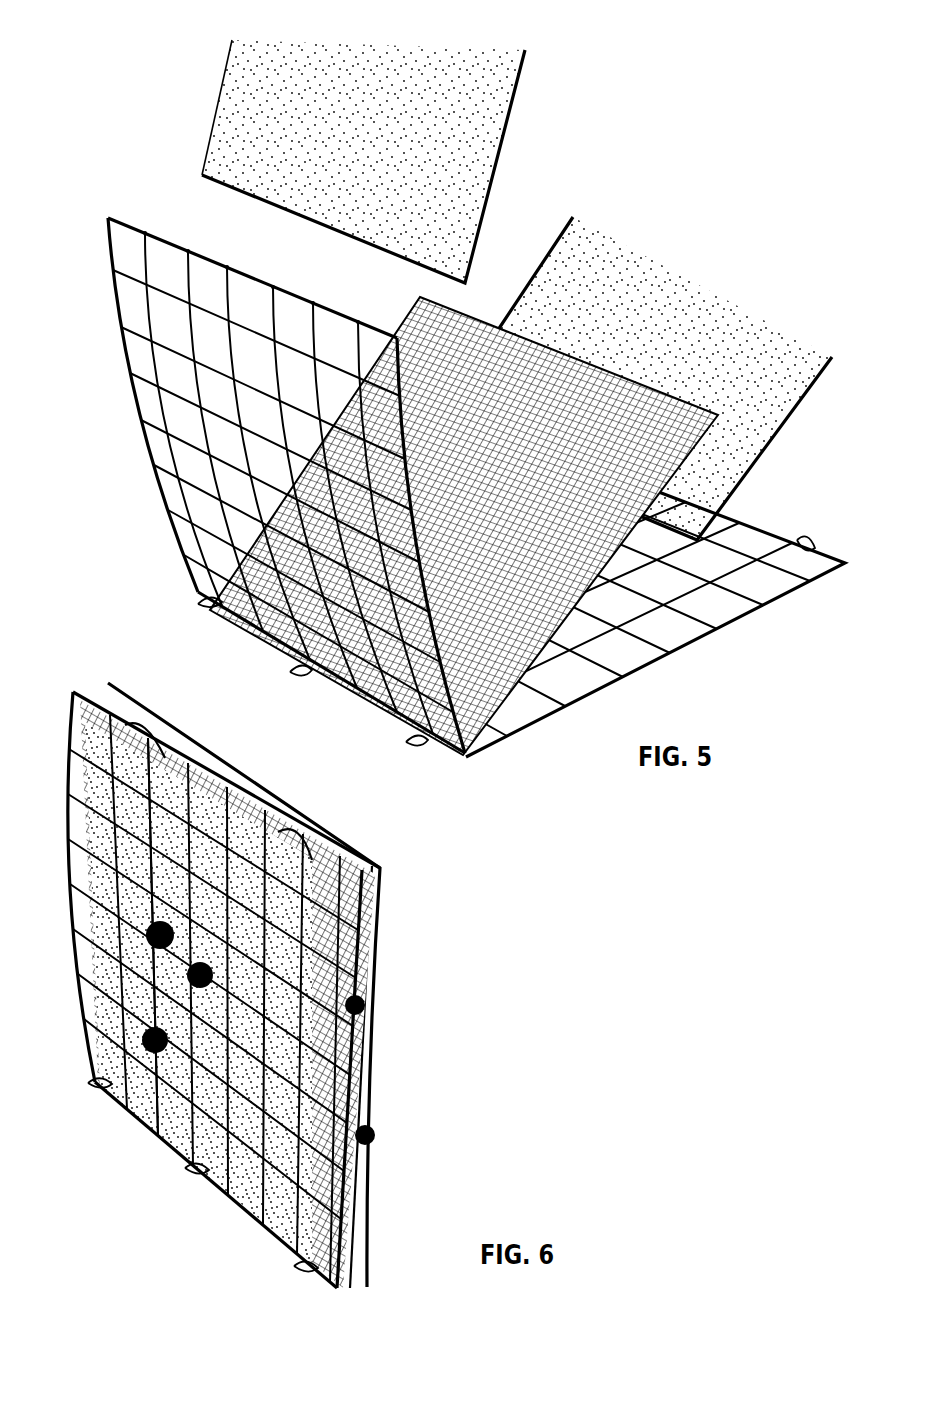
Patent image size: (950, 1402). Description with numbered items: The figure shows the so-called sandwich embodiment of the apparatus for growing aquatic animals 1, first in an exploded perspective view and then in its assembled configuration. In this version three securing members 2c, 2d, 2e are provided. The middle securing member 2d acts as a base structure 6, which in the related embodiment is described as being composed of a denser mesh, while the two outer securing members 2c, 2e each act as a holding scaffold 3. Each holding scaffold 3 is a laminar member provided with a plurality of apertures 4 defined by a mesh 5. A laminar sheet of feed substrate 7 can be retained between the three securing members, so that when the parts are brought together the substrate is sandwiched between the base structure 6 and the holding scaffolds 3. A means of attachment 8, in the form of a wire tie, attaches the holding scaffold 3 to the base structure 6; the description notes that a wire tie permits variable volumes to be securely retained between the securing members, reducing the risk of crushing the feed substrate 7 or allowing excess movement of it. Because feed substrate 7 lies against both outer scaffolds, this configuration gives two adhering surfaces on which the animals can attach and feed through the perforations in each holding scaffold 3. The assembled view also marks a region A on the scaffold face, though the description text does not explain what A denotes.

In FIG. 5, the apparatus for growing aquatic animals 1 is at (467, 416).
In FIG. 6, the apparatus for growing aquatic animals 1 is at (240, 969).
In FIG. 5, the securing member 2c is at (166, 490).
In FIG. 6, the securing member 2c is at (70, 890).
In FIG. 5, the securing member 2d is at (578, 655).
In FIG. 6, the securing member 2d is at (224, 782).
In FIG. 5, the securing member 2e is at (504, 746).
In FIG. 6, the securing member 2e is at (380, 887).
In FIG. 5, the holding scaffold 3 is at (334, 505).
In FIG. 6, the holding scaffold 3 is at (231, 990).
In FIG. 5, the apertures 4 is at (523, 605).
In FIG. 6, the apertures 4 is at (370, 968).
In FIG. 5, the mesh 5 is at (541, 609).
In FIG. 6, the mesh 5 is at (380, 933).
In FIG. 5, the base structure 6 is at (410, 323).
In FIG. 6, the base structure 6 is at (100, 690).
In FIG. 5, the feed substrate 7 is at (568, 263).
In FIG. 6, the feed substrate 7 is at (209, 992).
In FIG. 5, the means of attachment 8 is at (300, 670).
In FIG. 6, the means of attachment 8 is at (315, 828).
In FIG. 6, the stone contact region A is at (150, 958).